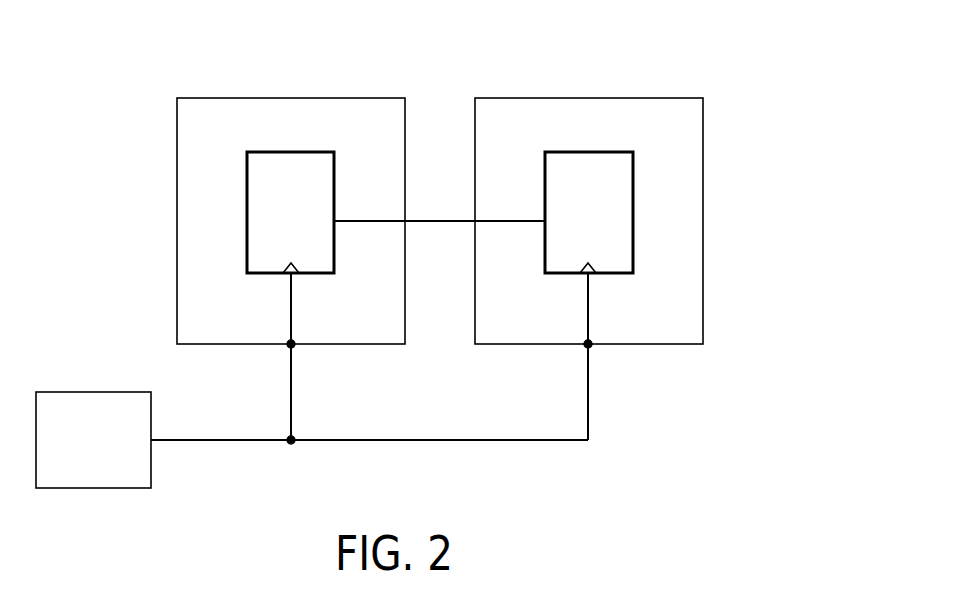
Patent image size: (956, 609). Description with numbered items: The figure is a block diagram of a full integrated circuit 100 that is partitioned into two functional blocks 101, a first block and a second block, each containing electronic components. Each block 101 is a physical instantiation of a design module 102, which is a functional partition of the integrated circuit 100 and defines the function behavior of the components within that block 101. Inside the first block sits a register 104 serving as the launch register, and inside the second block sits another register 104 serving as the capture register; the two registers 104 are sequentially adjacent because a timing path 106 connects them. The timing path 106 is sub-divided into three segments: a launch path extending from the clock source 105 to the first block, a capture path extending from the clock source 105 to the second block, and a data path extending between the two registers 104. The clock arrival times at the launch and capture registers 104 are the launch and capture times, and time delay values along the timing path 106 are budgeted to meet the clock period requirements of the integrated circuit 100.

The integrated circuit 100 is at (769, 45).
The functional block 101 is at (176, 130).
The design module 102 is at (232, 329).
The register 104 is at (303, 216).
The clock source 105 is at (93, 440).
The timing path 106 is at (454, 222).